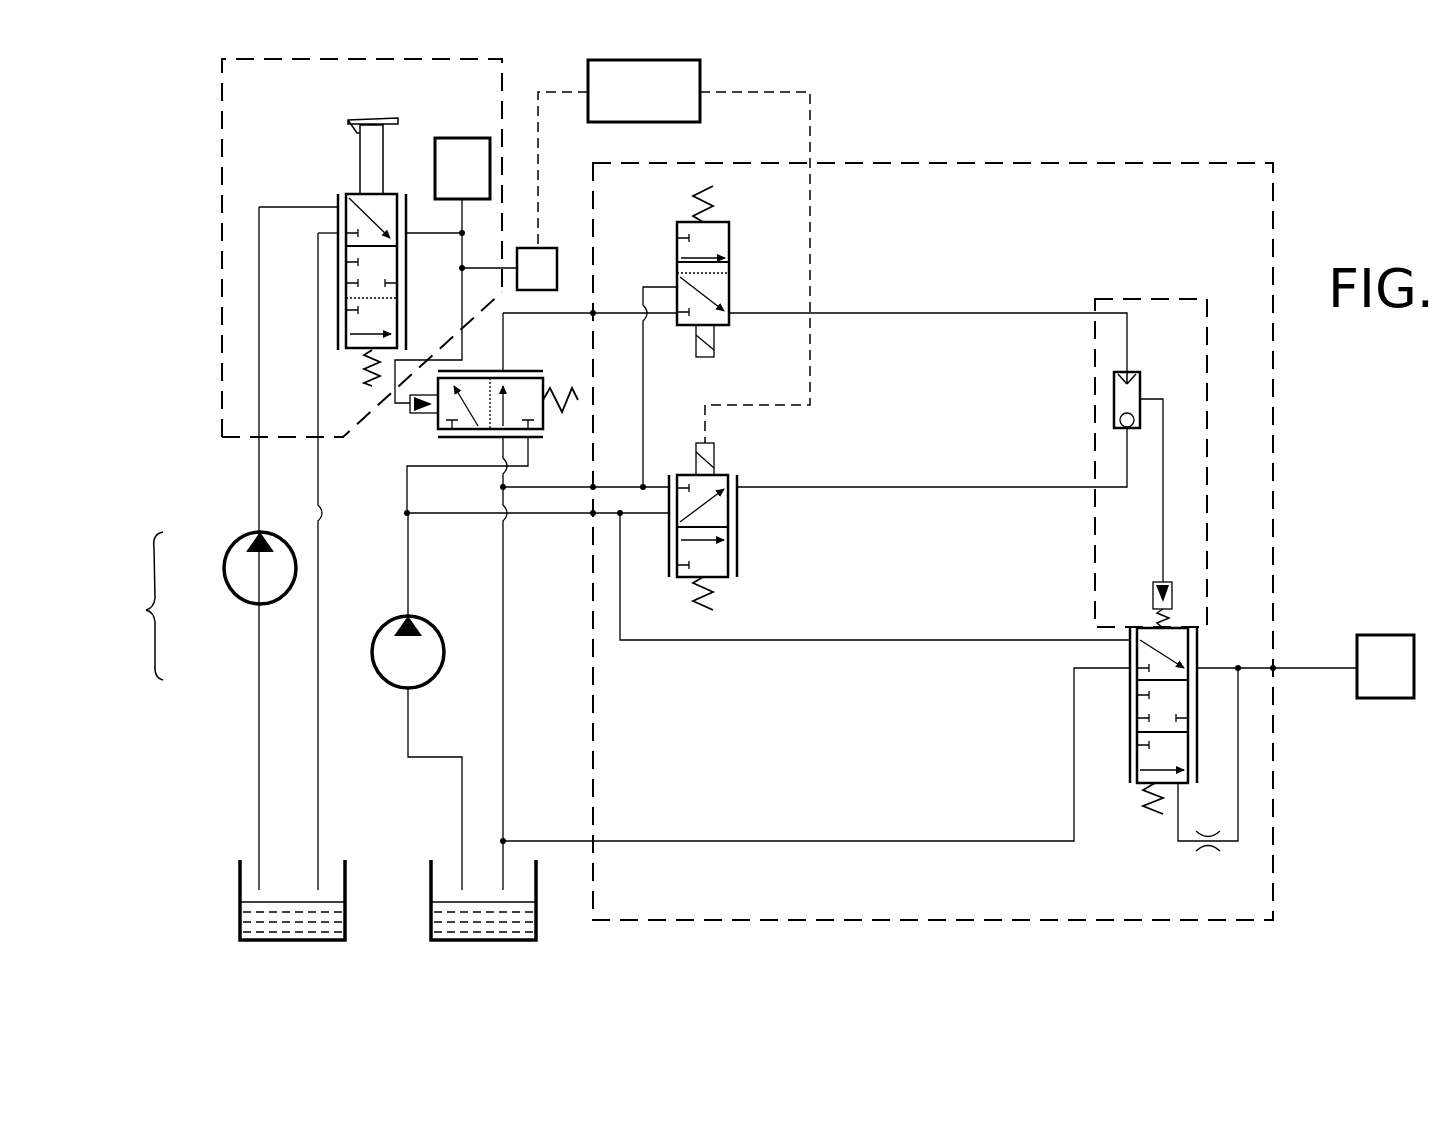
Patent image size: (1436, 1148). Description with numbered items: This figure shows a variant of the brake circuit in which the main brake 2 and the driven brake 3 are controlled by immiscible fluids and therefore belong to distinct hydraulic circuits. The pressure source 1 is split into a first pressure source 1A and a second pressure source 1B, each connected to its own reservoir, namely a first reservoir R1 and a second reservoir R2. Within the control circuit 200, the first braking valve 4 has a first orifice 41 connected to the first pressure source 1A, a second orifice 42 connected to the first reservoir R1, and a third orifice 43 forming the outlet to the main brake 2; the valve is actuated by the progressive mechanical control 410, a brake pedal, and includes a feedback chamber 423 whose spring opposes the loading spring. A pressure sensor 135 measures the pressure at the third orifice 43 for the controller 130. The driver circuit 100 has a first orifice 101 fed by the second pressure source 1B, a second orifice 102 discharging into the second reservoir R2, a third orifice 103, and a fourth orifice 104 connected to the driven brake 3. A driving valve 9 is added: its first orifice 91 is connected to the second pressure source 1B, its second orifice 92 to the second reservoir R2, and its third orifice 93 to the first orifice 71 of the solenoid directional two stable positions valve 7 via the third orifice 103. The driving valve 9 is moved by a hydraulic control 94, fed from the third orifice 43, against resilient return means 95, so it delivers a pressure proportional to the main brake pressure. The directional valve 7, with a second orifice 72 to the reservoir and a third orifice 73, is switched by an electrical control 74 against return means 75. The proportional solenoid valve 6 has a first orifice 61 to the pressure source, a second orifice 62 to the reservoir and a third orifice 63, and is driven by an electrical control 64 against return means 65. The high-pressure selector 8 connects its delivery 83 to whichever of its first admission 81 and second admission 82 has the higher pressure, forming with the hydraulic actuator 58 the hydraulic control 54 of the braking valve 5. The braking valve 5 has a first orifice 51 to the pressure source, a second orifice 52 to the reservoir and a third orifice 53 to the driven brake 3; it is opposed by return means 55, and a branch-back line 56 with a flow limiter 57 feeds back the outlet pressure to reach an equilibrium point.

The pressure source 1 is at (286, 610).
The first pressure source 1A is at (224, 568).
The second pressure source 1B is at (372, 652).
The main brake 2 is at (462, 185).
The driven brake 3 is at (1385, 666).
The first braking valve 4 is at (370, 247).
The first orifice 41 is at (338, 182).
The second orifice 42 is at (318, 238).
The third orifice 43 is at (410, 240).
The progressive mechanical control 410 is at (372, 122).
The feedback chamber 423 is at (378, 380).
The braking valve 5 is at (1177, 745).
The first orifice 51 is at (1130, 640).
The second orifice 52 is at (1128, 678).
The third orifice 53 is at (1200, 664).
The hydraulic control 54 is at (1152, 299).
The return means 55 is at (1150, 815).
The branch-back line 56 is at (1238, 841).
The flow limiter 57 is at (1208, 852).
The hydraulic actuator 58 is at (1165, 582).
The proportional solenoid valve 6 is at (724, 525).
The first orifice 61 is at (669, 518).
The second orifice 62 is at (669, 484).
The third orifice 63 is at (740, 486).
The electrical control 64 is at (714, 448).
The return means 65 is at (703, 607).
The solenoid directional two stable positions valve 7 is at (715, 330).
The first orifice 71 is at (677, 320).
The second orifice 72 is at (677, 280).
The third orifice 73 is at (729, 318).
The electrical control 74 is at (705, 357).
The return means 75 is at (712, 206).
The high-pressure selector 8 is at (1114, 452).
The first admission 81 is at (1125, 432).
The second admission 82 is at (1130, 368).
The delivery 83 is at (1142, 398).
The driving valve 9 is at (476, 413).
The first orifice 91 is at (533, 437).
The second orifice 92 is at (528, 441).
The third orifice 93 is at (505, 371).
The hydraulic control 94 is at (410, 420).
The resilient return means 95 is at (562, 392).
The driver circuit 100 is at (922, 163).
The first orifice 101 is at (593, 516).
The second orifice 102 is at (593, 487).
The third orifice 103 is at (593, 316).
The fourth orifice 104 is at (1275, 666).
The controller 130 is at (674, 251).
The pressure sensor 135 is at (557, 268).
The control circuit 200 is at (222, 243).
The first reservoir R1 is at (240, 906).
The second reservoir R2 is at (431, 906).